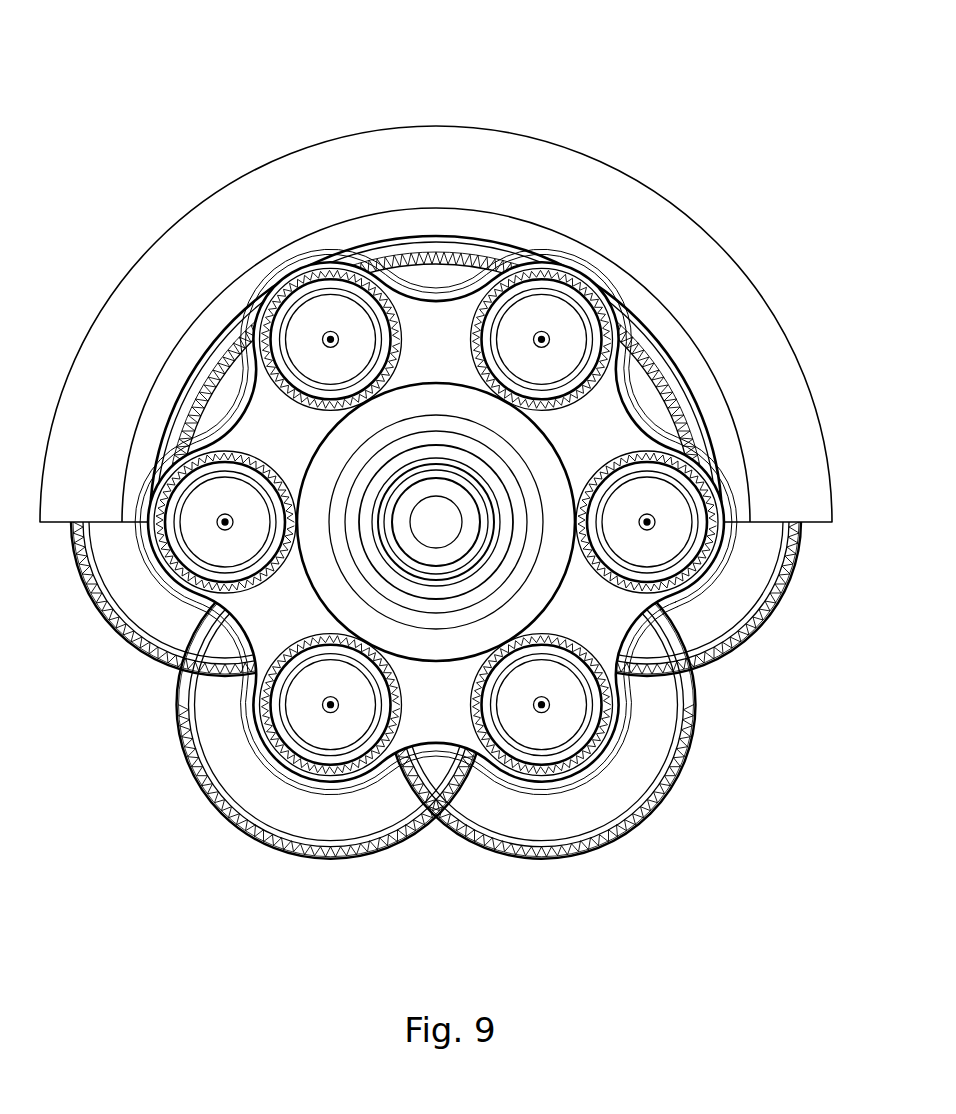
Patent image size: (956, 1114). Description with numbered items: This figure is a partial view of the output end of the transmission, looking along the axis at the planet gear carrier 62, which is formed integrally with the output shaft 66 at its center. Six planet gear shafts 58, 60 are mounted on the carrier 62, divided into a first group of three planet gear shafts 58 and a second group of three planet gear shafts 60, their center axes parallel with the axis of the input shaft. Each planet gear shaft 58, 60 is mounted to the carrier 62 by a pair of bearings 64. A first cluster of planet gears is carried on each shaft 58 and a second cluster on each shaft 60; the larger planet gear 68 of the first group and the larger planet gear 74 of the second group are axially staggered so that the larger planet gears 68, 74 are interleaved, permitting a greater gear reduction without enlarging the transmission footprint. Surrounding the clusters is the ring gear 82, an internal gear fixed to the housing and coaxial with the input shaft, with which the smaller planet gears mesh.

The planet gear shaft 58 is at (604, 300).
The planet gear shaft 60 is at (318, 298).
The planet gear carrier 62 is at (418, 320).
The bearing 64 is at (282, 298).
The output shaft 66 is at (557, 450).
The larger planet gear 68 is at (136, 598).
The larger planet gear 74 is at (768, 540).
The ring gear 82 is at (222, 387).